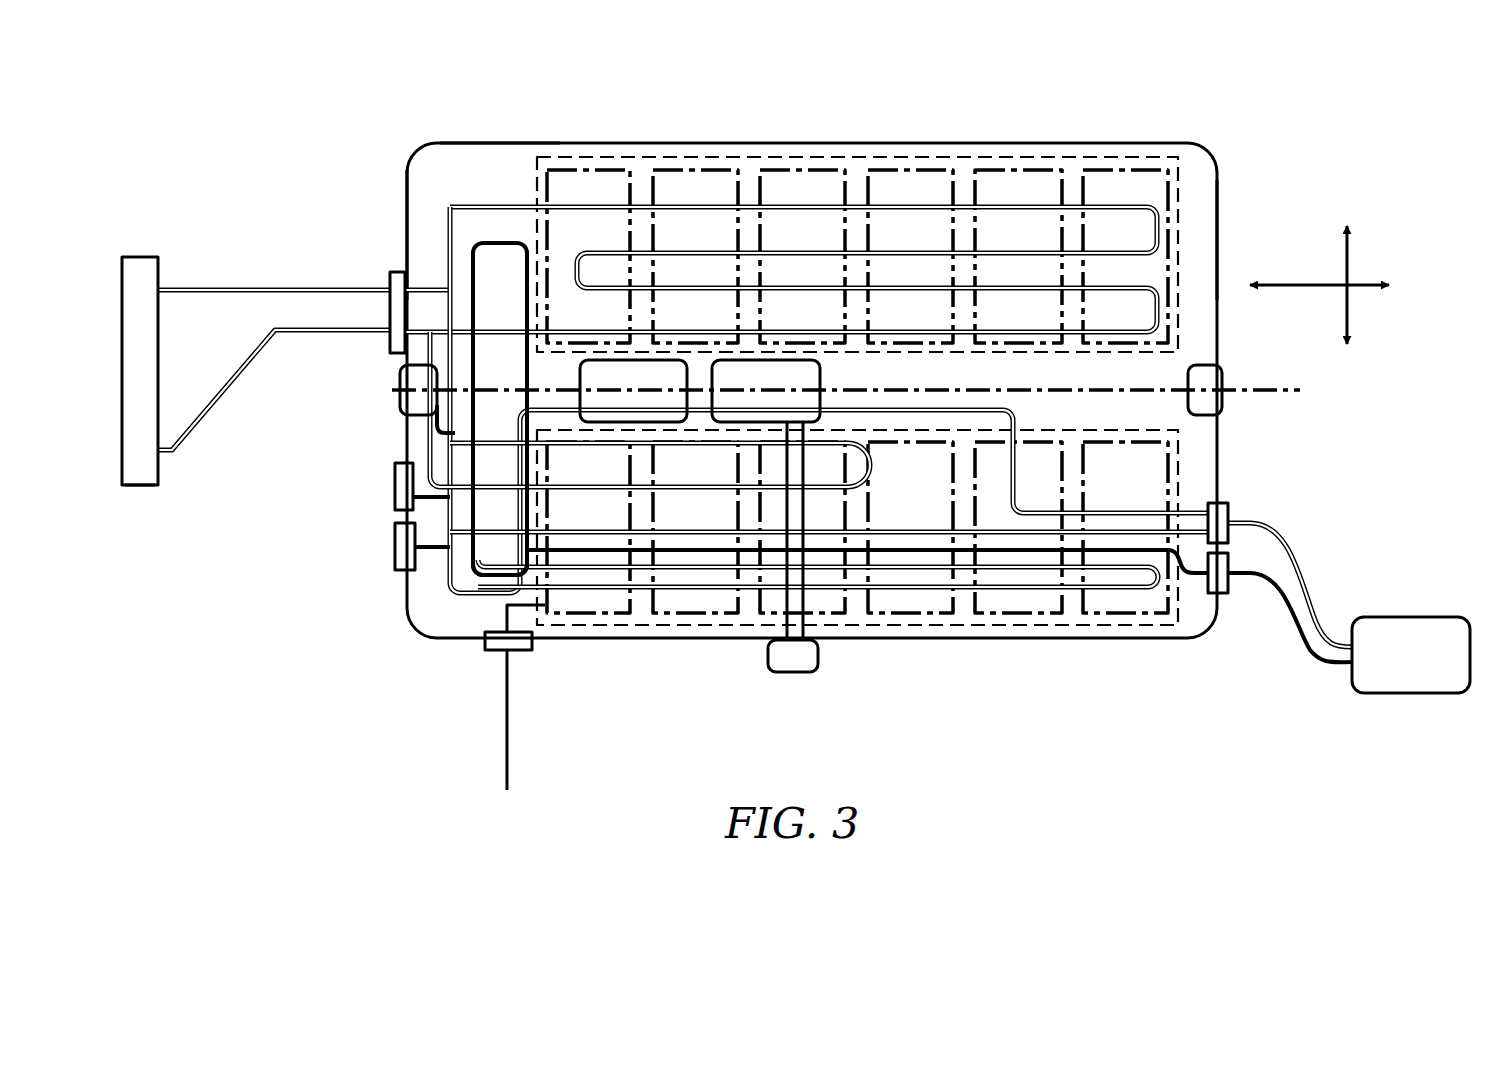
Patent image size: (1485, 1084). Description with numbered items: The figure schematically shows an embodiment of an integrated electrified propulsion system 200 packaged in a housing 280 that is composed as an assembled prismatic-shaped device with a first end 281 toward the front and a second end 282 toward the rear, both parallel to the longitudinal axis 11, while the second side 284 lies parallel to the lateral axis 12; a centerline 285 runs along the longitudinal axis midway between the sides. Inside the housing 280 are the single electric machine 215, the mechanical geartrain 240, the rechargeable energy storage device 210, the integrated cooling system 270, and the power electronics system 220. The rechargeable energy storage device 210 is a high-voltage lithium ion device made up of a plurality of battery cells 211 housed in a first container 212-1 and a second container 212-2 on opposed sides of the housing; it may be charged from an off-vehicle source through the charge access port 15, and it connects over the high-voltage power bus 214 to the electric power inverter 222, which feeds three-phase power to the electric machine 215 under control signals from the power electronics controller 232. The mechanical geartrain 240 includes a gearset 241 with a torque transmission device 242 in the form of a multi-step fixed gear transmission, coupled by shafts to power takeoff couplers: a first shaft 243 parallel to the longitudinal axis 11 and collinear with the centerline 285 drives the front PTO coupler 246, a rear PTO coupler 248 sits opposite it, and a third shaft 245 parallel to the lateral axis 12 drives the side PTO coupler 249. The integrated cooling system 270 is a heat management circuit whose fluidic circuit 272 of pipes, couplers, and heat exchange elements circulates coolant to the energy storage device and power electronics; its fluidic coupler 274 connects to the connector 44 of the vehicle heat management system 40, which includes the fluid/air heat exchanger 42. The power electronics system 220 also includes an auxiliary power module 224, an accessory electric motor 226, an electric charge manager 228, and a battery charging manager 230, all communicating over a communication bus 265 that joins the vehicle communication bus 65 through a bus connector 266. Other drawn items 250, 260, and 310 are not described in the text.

The longitudinal axis 11 is at (1318, 285).
The lateral axis 12 is at (1350, 300).
The charge access port 15 is at (1415, 617).
The heat management system 40 is at (140, 254).
The fluid/air heat exchanger 42 is at (140, 487).
The connector 44 is at (281, 350).
The vehicle communication bus 65 is at (507, 755).
The integrated electrified propulsion system 200 is at (882, 384).
The rechargeable energy storage device 210 is at (525, 240).
The battery cells 211 is at (775, 170).
The first container 212-1 is at (1140, 157).
The second container 212-2 is at (1135, 626).
The high-voltage power bus 214 is at (843, 464).
The single electric machine 215 is at (666, 426).
The power electronics system 220 is at (672, 651).
The electric power inverter 222 is at (672, 651).
The auxiliary power module 224 is at (672, 651).
The accessory electric motor 226 is at (672, 651).
The electric charge manager 228 is at (672, 651).
The battery charging manager 230 is at (672, 651).
The power electronics controller 232 is at (407, 690).
The mechanical geartrain 240 is at (797, 444).
The gearset 241 is at (797, 444).
The torque transmission device 242 is at (797, 444).
The first shaft 243 is at (437, 432).
The third shaft 245 is at (812, 618).
The front PTO coupler 246 is at (398, 400).
The rear PTO coupler 248 is at (1222, 400).
The side PTO coupler 249 is at (790, 672).
The pump 250 is at (393, 503).
The valve 260 is at (393, 548).
The communication bus 265 is at (565, 612).
The bus connector 266 is at (507, 653).
The integrated cooling system 270 is at (429, 284).
The fluidic circuit 272 is at (769, 490).
The fluidic coupler 274 is at (390, 312).
The housing 280 is at (1222, 174).
The first end 281 is at (404, 183).
The second end 282 is at (1200, 202).
The second side 284 is at (474, 140).
The centerline 285 is at (861, 380).
The conductor bend 310 is at (527, 581).